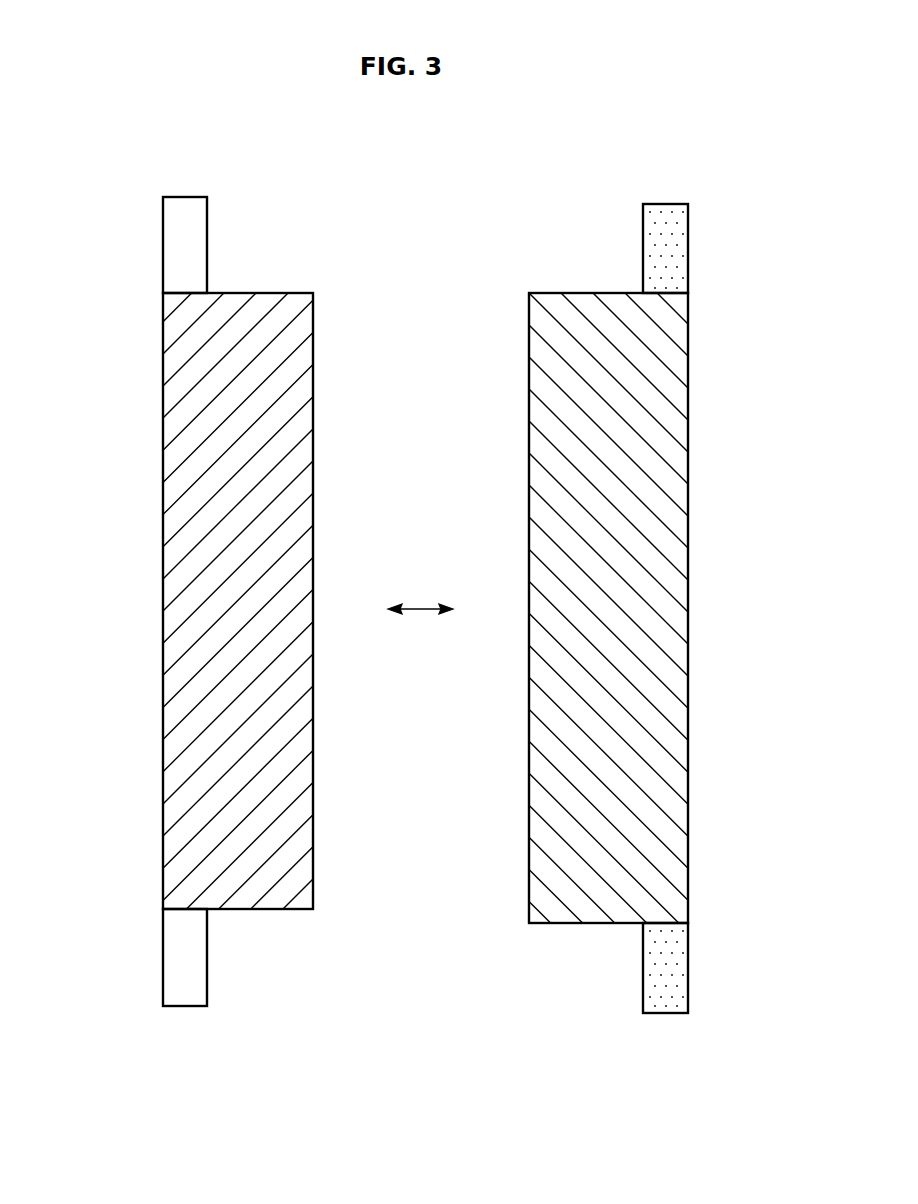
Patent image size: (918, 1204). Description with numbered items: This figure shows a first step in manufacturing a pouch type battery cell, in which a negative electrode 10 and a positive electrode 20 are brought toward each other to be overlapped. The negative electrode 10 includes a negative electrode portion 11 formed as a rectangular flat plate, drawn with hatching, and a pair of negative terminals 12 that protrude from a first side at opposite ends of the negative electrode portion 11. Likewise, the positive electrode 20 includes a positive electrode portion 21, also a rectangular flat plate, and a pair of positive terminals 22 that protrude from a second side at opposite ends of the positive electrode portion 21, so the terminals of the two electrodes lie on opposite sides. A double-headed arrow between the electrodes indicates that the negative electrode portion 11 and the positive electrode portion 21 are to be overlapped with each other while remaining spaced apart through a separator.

The negative electrode 10 is at (169, 601).
The negative electrode portion 11 is at (176, 493).
The negative terminals 12 is at (193, 247).
The positive electrode 20 is at (674, 608).
The positive electrode portion 21 is at (672, 492).
The positive terminals 22 is at (672, 261).